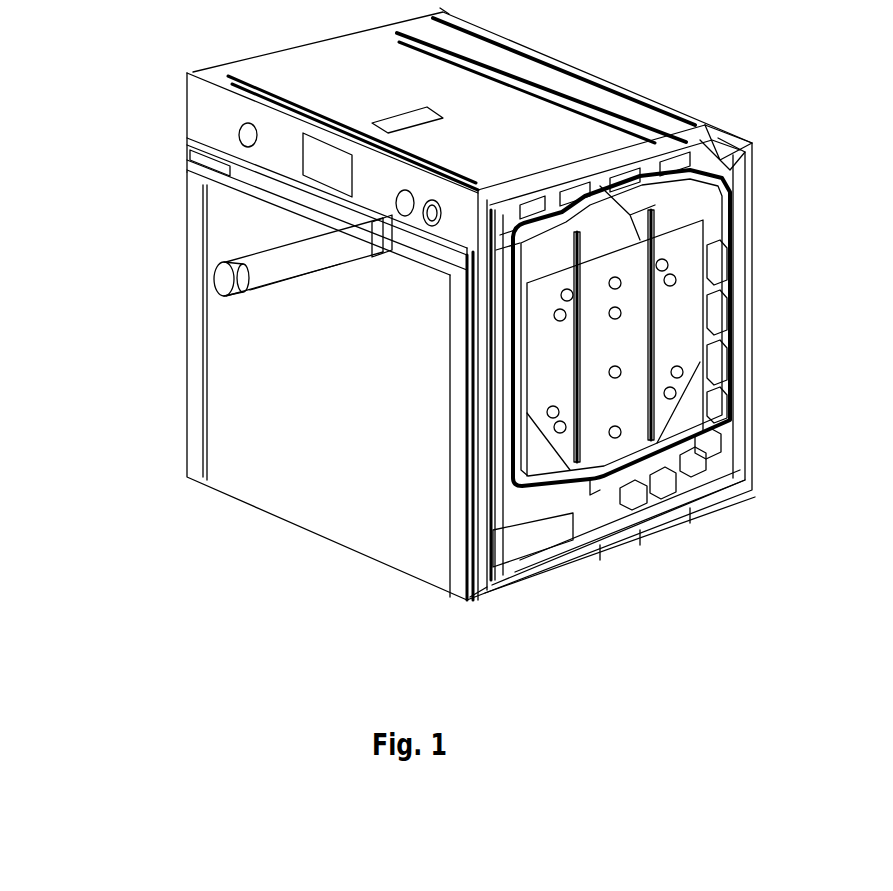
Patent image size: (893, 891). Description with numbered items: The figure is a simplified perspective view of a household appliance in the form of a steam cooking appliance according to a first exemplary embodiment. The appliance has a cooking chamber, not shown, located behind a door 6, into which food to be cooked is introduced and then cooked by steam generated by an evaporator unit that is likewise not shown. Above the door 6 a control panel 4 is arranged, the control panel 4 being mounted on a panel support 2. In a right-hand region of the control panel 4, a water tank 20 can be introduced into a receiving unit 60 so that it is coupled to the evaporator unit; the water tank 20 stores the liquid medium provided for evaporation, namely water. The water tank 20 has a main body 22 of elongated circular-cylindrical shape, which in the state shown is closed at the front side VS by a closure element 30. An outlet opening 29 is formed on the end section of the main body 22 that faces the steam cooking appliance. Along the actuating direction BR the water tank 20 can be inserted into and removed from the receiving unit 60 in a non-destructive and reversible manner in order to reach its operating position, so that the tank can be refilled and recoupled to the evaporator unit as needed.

The panel support 2 is at (483, 200).
The control panel 4 is at (215, 110).
The door 6 is at (357, 497).
The water tank 20 is at (282, 290).
The main body 22 is at (333, 247).
The outlet opening 29 is at (391, 215).
The closure element 30 is at (231, 295).
The receiving unit 60 is at (436, 205).
The actuating direction BR is at (140, 296).
The front side VS is at (212, 281).